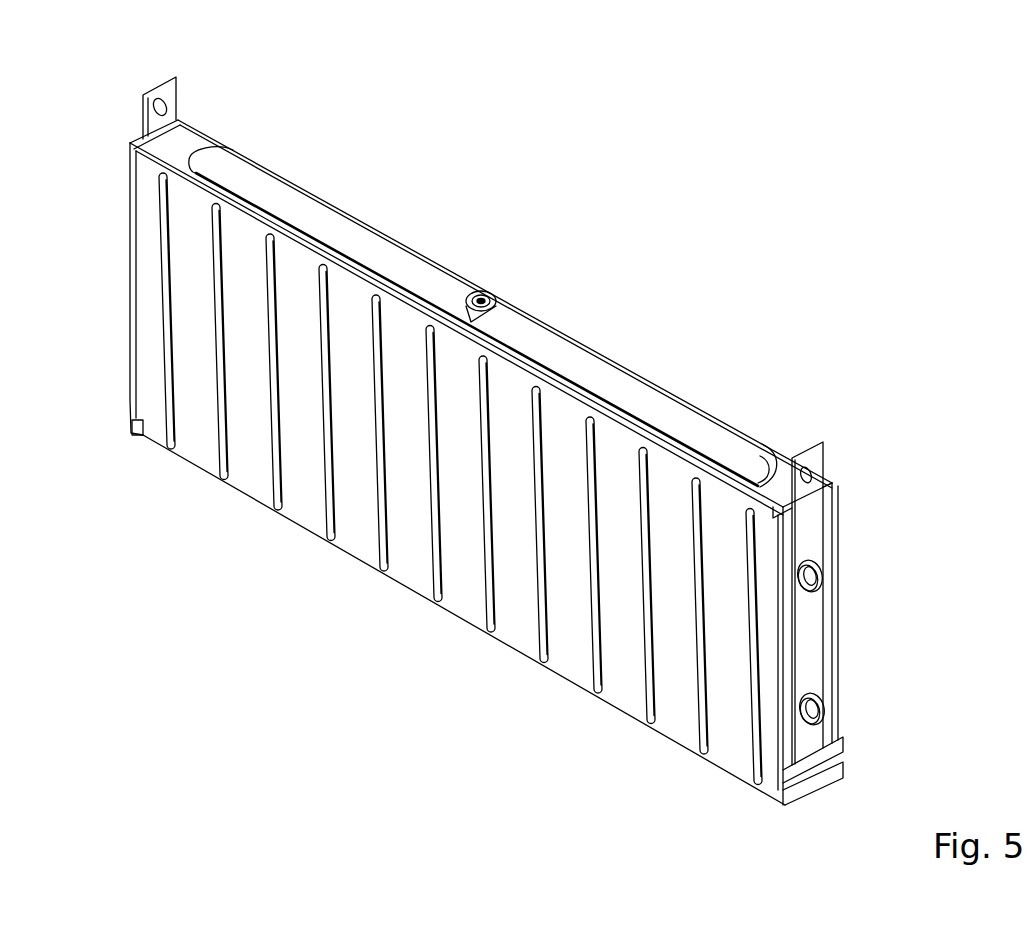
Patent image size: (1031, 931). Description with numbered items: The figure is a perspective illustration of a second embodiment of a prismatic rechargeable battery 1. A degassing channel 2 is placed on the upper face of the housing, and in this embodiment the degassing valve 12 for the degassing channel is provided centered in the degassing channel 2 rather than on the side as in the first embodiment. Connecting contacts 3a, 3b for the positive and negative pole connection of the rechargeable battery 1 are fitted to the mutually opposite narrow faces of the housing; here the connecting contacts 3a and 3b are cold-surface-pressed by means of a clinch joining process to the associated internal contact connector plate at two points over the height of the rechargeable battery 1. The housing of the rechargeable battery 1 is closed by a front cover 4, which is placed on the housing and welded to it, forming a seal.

The prismatic rechargeable battery 1 is at (386, 108).
The degassing channel 2 is at (640, 395).
The connecting contact 3a is at (142, 108).
The connecting contact 3b is at (822, 458).
The front cover 4 is at (460, 592).
The degassing valve 12 is at (484, 289).